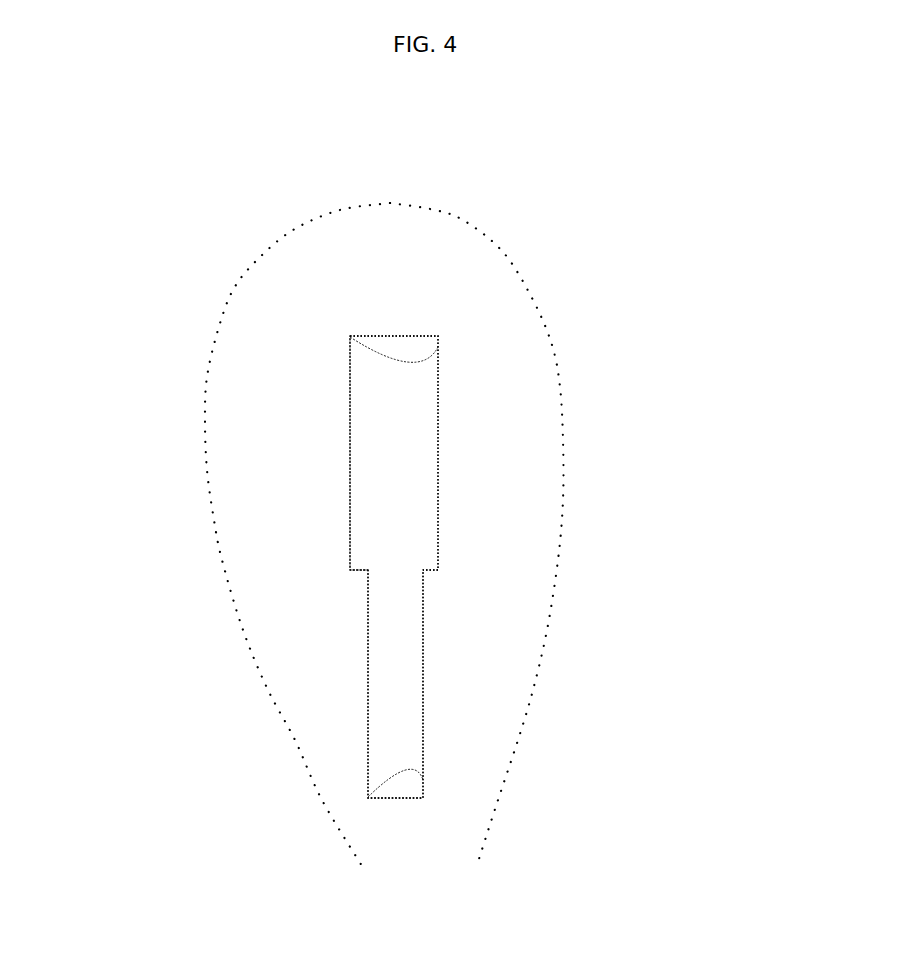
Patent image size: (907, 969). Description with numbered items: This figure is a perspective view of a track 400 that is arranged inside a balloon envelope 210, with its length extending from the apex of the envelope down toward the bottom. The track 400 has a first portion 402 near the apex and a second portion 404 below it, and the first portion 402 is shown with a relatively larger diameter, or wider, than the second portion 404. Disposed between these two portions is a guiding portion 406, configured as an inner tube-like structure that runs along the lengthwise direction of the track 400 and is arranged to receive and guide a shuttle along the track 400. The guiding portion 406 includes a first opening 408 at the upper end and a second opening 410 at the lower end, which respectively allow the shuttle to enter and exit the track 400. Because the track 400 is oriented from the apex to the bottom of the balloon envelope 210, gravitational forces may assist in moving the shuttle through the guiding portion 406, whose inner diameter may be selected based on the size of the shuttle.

The track 400 is at (878, 58).
The balloon envelope 210 is at (579, 318).
The first portion 402 is at (350, 443).
The second portion 404 is at (370, 670).
The guiding portion 406 is at (412, 510).
The first opening 408 is at (403, 345).
The second opening 410 is at (415, 783).